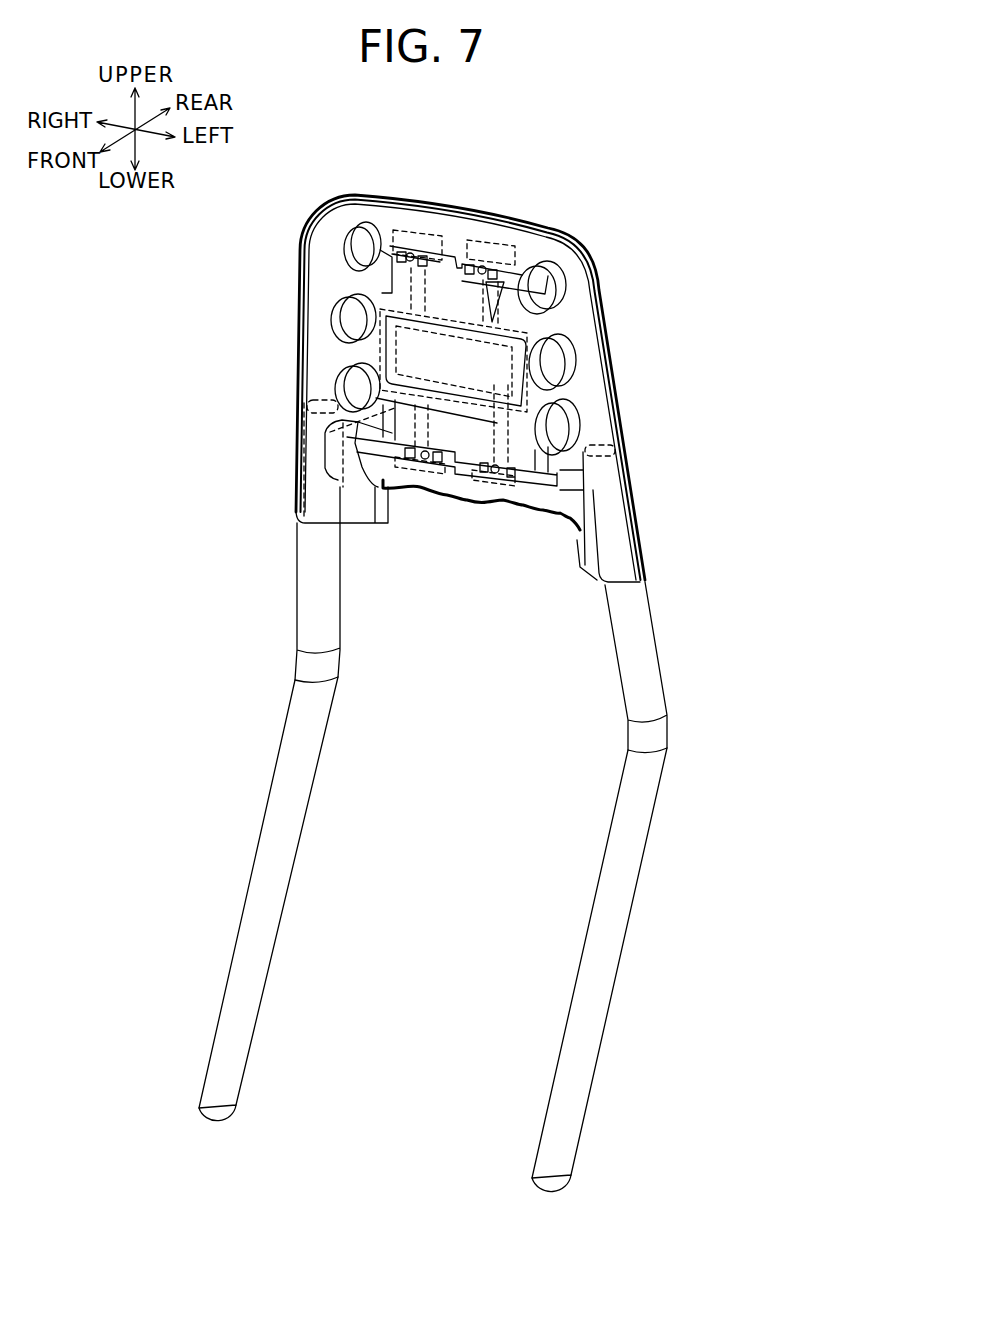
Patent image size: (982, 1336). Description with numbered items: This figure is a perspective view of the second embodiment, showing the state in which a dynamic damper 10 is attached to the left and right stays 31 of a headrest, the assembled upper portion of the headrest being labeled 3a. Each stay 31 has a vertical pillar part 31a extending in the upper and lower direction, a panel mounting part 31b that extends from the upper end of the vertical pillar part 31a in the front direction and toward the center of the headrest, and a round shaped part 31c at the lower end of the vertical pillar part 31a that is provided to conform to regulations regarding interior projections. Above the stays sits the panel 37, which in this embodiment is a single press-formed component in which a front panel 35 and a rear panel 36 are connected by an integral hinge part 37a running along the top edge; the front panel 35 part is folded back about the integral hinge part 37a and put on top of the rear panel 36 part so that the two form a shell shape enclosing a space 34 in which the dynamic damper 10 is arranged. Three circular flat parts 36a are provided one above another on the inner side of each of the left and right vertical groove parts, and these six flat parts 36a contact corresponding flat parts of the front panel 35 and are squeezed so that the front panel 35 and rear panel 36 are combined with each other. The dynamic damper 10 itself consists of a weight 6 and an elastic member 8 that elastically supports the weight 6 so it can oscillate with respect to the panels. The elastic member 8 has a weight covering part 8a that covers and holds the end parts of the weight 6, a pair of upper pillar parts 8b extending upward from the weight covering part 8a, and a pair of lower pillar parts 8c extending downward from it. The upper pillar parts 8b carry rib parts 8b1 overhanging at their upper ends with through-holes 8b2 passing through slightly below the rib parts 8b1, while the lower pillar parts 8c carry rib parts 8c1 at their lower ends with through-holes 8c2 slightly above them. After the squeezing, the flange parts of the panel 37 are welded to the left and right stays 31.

The upper frame portion 3a is at (594, 224).
The integral hinge part 37a is at (393, 205).
The panel 37 is at (532, 393).
The rear panel 36 is at (622, 480).
The front panel 35 is at (618, 520).
The circular flat parts 36a is at (364, 246).
The weight 6 is at (330, 434).
The elastic member 8 is at (491, 359).
The weight covering part 8a is at (472, 390).
The upper pillar parts 8b is at (551, 235).
The lower pillar parts 8c is at (529, 473).
The rib parts 8b1 is at (497, 258).
The through-holes 8b2 is at (478, 262).
The rib parts 8c1 is at (495, 475).
The through-holes 8c2 is at (483, 470).
The dynamic damper 10 is at (442, 366).
The space 34 is at (415, 300).
The stay 31 is at (476, 873).
The vertical pillar part 31a is at (281, 874).
The panel mounting part 31b is at (306, 585).
The round shaped part 31c is at (548, 1190).